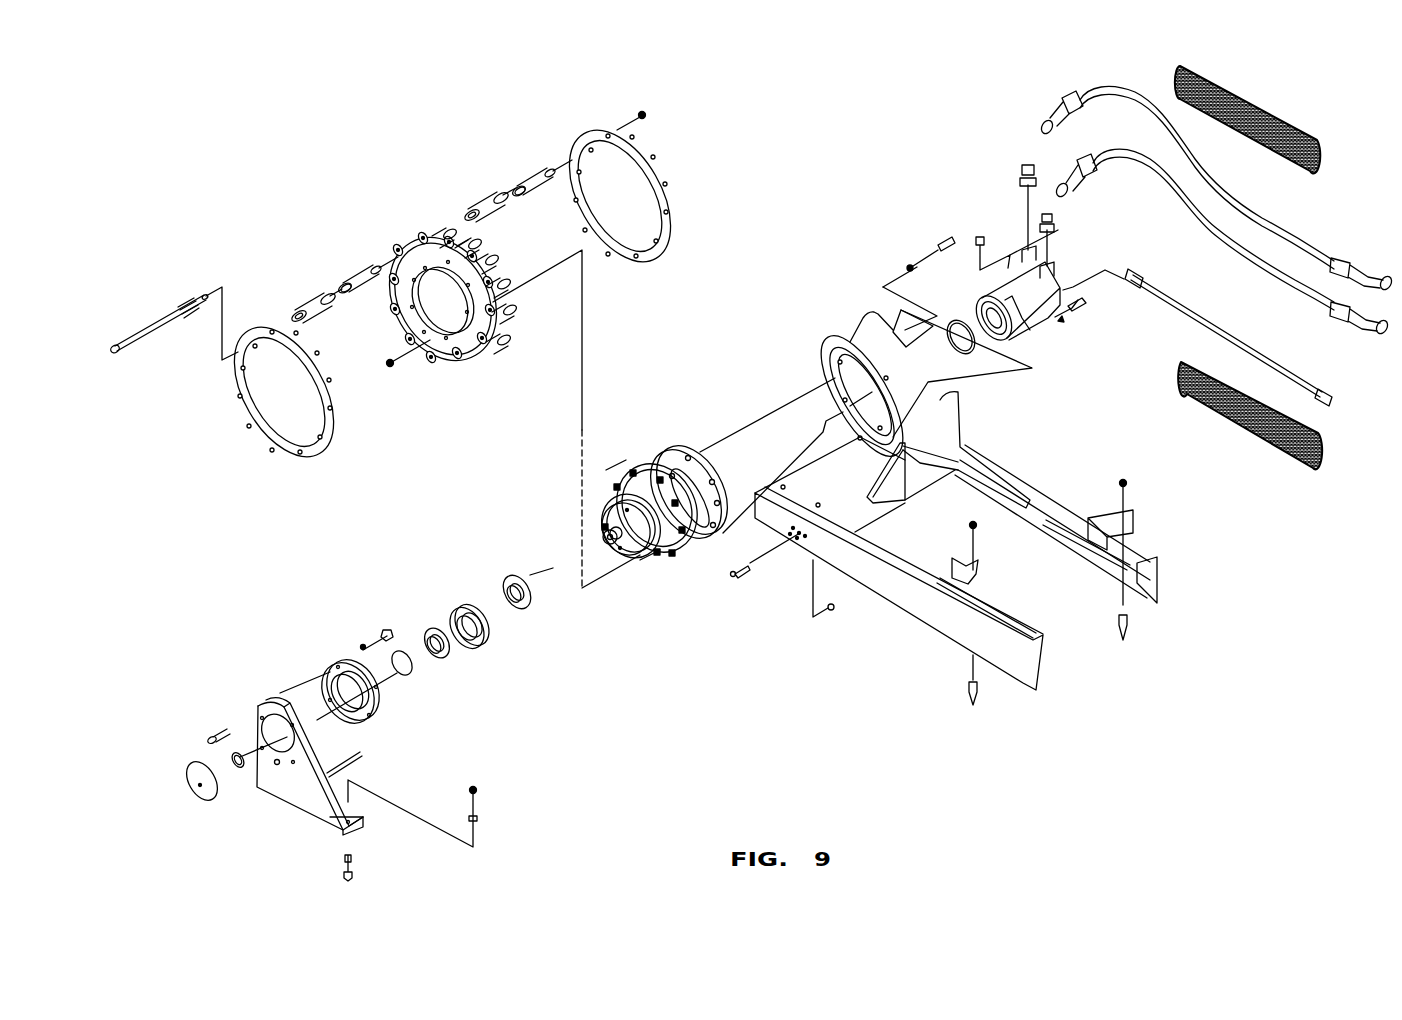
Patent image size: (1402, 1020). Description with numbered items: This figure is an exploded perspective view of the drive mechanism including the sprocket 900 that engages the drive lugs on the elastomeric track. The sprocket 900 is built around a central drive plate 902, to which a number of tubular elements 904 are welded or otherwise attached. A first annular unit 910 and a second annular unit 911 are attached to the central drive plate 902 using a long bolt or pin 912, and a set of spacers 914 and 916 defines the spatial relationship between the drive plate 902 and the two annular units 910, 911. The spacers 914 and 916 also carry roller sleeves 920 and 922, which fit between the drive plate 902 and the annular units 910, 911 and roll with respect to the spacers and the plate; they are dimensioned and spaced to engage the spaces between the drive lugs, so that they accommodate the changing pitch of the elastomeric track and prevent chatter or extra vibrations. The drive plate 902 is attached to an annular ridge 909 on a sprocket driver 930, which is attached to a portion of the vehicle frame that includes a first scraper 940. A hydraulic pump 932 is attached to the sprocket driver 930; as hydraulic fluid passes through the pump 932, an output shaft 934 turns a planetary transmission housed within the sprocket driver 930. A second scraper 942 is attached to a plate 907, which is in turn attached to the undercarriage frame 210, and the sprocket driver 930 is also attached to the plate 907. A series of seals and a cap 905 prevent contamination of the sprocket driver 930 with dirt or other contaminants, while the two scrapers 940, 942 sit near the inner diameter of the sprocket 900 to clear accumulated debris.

The sprocket 900 is at (693, 210).
The long bolt or pin 912 is at (165, 316).
The first annular unit 910 is at (282, 441).
The roller sleeve 920 is at (303, 302).
The spacer 914 is at (355, 274).
The central drive plate 902 is at (410, 234).
The tubular elements 904 is at (500, 332).
The roller sleeve 922 is at (481, 199).
The spacer 916 is at (528, 173).
The second annular unit 911 is at (645, 150).
The first scraper 940 is at (850, 440).
The output shaft 934 is at (970, 322).
The hydraulic pump 932 is at (1023, 317).
The undercarriage frame 210 is at (1033, 660).
The annular ridge 909 is at (692, 542).
The sprocket driver 930 is at (662, 560).
The second scraper 942 is at (337, 755).
The cap 905 is at (190, 788).
The plate 907 is at (290, 805).